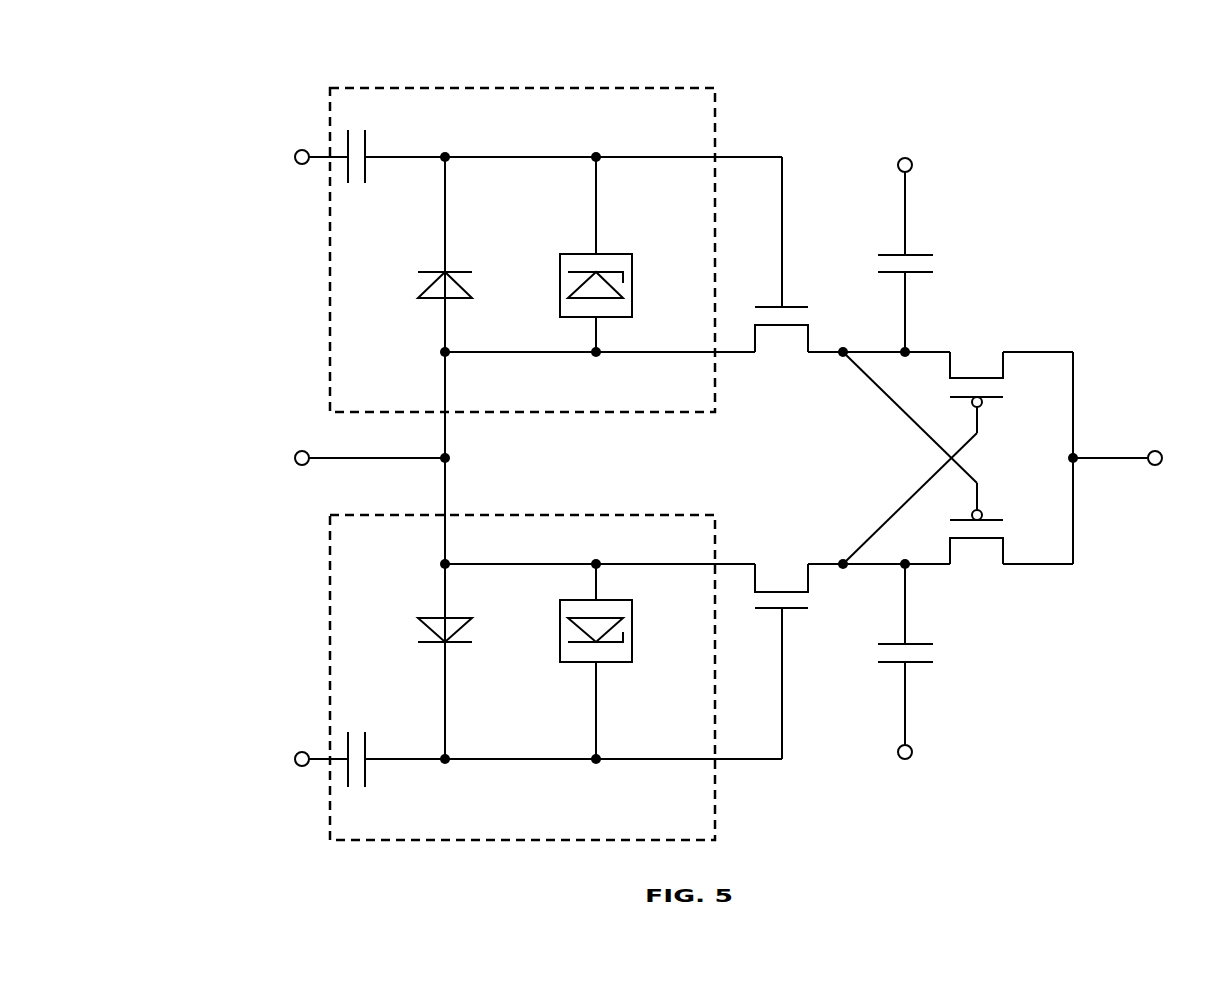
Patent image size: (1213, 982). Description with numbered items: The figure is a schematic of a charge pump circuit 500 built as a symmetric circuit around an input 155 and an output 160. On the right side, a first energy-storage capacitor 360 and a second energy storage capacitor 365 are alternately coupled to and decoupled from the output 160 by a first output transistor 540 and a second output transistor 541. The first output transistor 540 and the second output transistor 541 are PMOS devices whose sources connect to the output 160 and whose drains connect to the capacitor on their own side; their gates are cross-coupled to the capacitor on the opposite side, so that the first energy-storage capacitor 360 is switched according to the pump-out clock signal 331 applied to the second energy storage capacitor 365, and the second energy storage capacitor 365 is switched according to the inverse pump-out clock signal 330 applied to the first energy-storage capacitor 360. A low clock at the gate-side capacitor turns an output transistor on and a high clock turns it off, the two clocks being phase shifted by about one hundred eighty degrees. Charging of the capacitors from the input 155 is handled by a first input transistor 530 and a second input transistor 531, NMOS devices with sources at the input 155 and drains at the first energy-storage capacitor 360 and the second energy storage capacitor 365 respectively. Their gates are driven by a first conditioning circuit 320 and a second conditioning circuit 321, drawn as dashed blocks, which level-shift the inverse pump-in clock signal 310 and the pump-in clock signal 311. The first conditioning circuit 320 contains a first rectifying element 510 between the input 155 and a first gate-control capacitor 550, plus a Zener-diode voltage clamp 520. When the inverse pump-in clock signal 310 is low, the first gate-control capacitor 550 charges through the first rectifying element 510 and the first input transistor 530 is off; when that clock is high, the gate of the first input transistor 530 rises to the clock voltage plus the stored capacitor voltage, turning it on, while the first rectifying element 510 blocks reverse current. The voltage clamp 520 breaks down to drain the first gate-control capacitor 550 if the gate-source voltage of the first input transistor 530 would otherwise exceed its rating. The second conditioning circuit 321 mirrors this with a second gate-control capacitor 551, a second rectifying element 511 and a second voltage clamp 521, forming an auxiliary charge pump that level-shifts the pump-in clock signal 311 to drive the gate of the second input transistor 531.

The charge pump circuit 500 is at (199, 37).
The inverse pump-in clock signal (clk2_i) 310 is at (212, 145).
The pump-in clock signal (clk2) 311 is at (222, 745).
The input 155 is at (245, 445).
The output 160 is at (1140, 410).
The inverse pump-out clock signal (clk1_i) 330 is at (882, 121).
The pump-out clock signal (clk1) 331 is at (883, 795).
The first conditioning circuit 320 is at (518, 88).
The second conditioning circuit 321 is at (548, 516).
The first gate-control capacitor (C2) 550 is at (356, 190).
The second gate-control capacitor (C1) 551 is at (357, 718).
The first rectifying element (Mab) 510 is at (430, 259).
The second rectifying element (Maa) 511 is at (428, 610).
The voltage clamp (Vclmp) 520 is at (580, 247).
The second voltage clamp (Vclmp) 521 is at (552, 610).
The first input transistor (M4) 530 is at (774, 381).
The second input transistor (M6) 531 is at (781, 524).
The first energy-storage capacitor (C4) 360 is at (920, 246).
The second energy storage capacitor (C3) 365 is at (921, 668).
The first output transistor (M5) 540 is at (1001, 322).
The second output transistor (M7) 541 is at (999, 592).